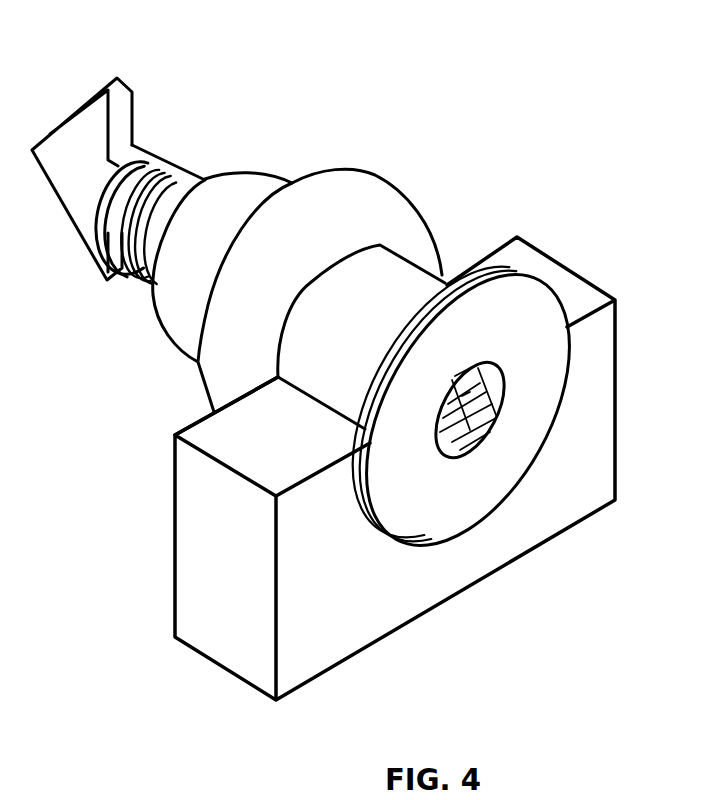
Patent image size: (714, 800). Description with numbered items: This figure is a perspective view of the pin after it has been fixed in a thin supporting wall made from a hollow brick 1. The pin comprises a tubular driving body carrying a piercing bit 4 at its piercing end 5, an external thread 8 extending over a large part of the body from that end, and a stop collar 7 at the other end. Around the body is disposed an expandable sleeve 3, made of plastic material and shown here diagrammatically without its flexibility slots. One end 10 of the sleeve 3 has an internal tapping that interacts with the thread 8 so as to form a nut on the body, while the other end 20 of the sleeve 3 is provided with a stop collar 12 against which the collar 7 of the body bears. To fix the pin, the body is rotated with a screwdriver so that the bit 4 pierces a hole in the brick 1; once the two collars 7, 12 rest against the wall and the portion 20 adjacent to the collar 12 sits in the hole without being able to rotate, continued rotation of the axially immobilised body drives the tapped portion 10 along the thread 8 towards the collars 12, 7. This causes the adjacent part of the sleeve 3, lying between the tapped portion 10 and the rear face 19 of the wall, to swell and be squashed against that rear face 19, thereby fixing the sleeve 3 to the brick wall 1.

The hollow brick 1 is at (210, 623).
The expandable sleeve 3 is at (367, 208).
The piercing bit 4 is at (72, 152).
The end of the body designed to receive the piercing bit 5 is at (118, 228).
The stop collar 7 is at (525, 430).
The external thread 8 is at (183, 192).
The tapped end of the sleeve 10 is at (245, 197).
The stop collar of the sleeve 12 is at (475, 277).
The rear face of the wall of the brick 19 is at (193, 423).
The other end of the sleeve 20 is at (333, 358).